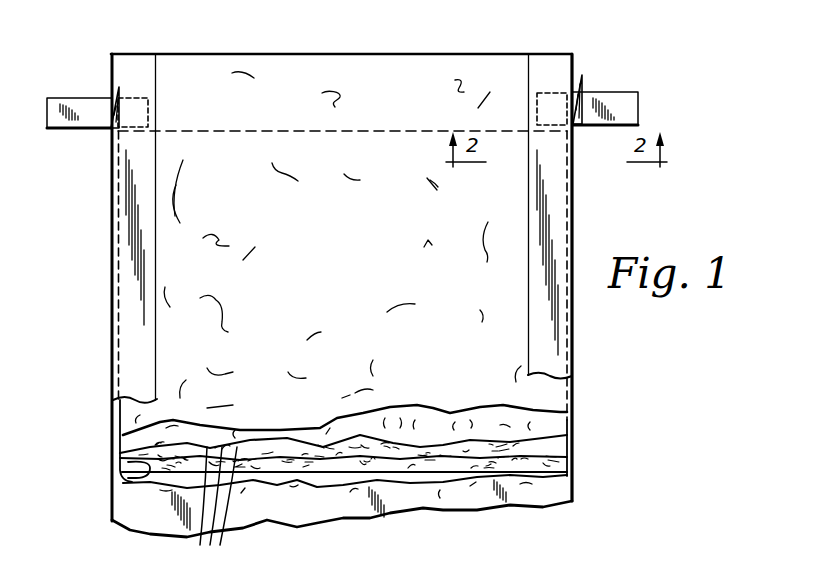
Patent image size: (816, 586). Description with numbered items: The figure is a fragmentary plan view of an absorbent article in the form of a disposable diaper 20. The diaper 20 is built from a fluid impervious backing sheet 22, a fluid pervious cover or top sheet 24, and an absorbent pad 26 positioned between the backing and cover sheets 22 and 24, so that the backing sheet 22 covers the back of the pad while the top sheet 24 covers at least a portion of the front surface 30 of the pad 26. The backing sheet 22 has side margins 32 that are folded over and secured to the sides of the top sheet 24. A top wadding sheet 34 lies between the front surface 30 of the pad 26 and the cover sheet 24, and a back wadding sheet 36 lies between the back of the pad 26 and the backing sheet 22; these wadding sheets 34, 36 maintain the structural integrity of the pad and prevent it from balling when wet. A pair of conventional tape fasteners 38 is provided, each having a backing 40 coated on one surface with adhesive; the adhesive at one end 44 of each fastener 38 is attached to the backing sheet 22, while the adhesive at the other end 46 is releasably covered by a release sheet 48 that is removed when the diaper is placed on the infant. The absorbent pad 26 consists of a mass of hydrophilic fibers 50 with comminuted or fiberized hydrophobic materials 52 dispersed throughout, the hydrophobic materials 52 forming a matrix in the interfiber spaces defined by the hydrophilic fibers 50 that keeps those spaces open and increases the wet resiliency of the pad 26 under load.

The absorbent article or disposable diaper 20 is at (204, 52).
The fluid impervious backing sheet 22 is at (560, 490).
The fluid pervious cover or top sheet 24 is at (384, 268).
The absorbent pad 26 is at (548, 446).
The front surface 30 is at (548, 446).
The side margins 32 is at (132, 298).
The top wadding sheet 34 is at (427, 418).
The back wadding sheet 36 is at (303, 477).
The tape fasteners 38 is at (68, 97).
The backing 40 is at (133, 100).
The one end 44 is at (149, 120).
The other end 46 is at (52, 130).
The release sheet 48 is at (85, 122).
The hydrophilic fibers 50 is at (152, 462).
The hydrophobic materials 52 is at (218, 511).